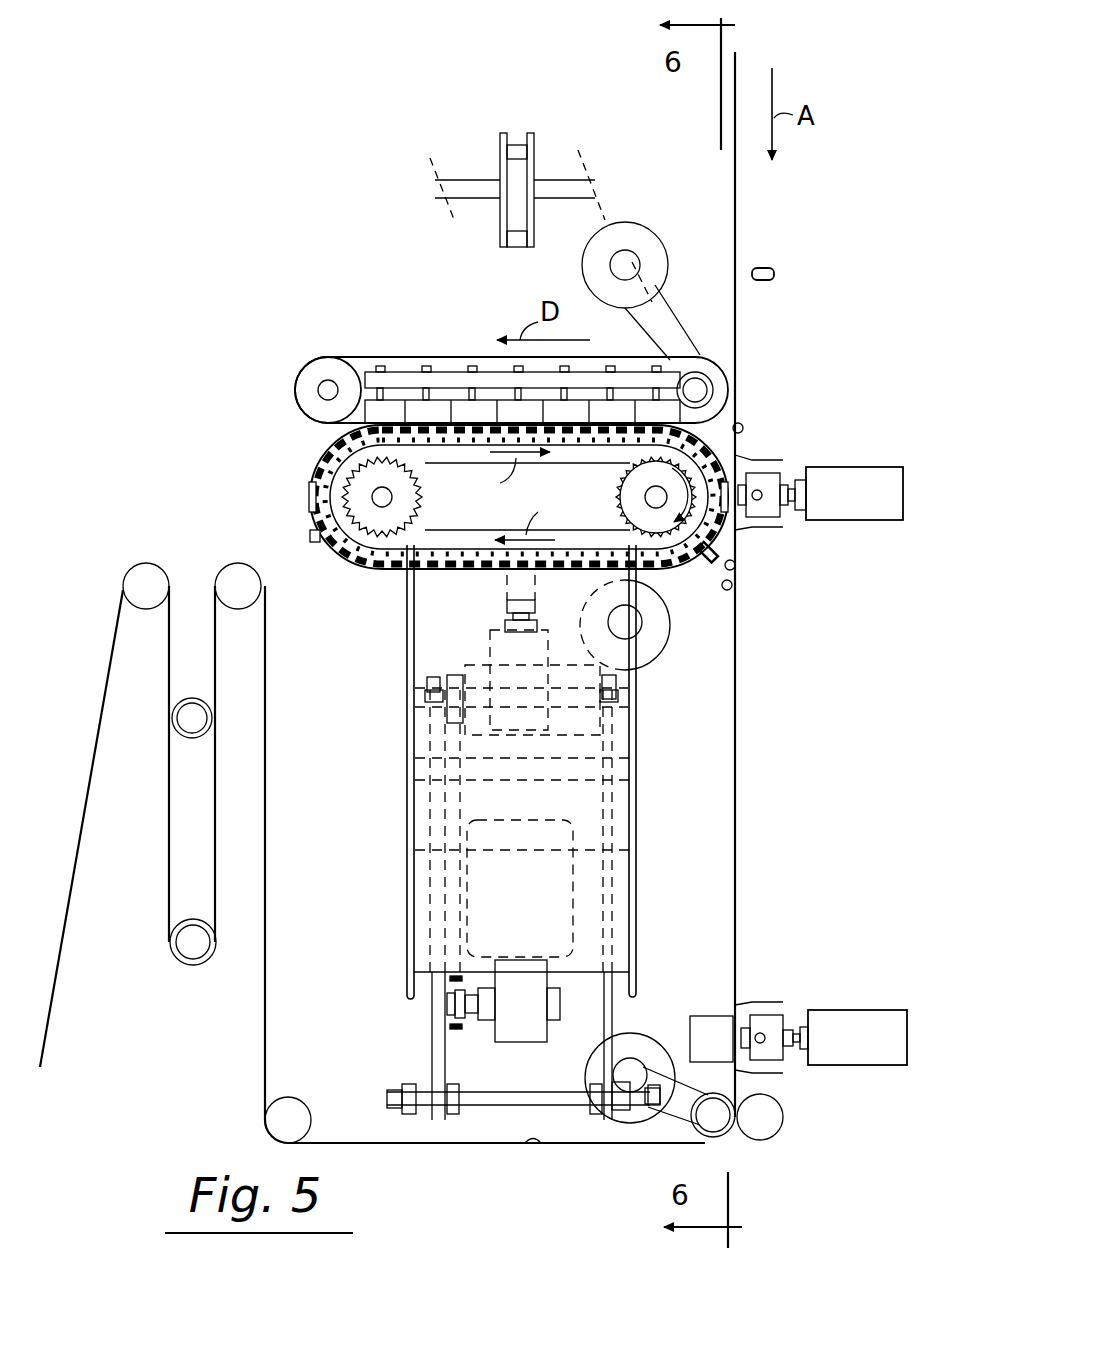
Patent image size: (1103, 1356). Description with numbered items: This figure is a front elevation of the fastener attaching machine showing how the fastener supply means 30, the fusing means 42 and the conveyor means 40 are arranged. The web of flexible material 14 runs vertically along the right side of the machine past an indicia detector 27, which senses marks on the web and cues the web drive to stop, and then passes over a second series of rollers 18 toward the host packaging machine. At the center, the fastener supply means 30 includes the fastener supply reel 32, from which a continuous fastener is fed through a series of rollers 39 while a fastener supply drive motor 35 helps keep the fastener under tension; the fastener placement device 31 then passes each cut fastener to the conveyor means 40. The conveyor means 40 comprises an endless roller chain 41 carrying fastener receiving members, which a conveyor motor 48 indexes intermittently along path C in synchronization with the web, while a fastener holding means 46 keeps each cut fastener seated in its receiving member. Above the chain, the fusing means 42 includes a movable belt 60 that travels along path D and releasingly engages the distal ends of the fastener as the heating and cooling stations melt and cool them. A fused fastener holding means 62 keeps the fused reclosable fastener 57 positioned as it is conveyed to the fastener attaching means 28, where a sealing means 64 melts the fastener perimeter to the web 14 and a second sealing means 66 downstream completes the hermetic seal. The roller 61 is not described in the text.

The flexible material 14 is at (105, 672).
The second series of rollers 18 is at (183, 978).
The indicia detector 27 is at (766, 268).
The fastener attaching means 28 is at (856, 524).
The fastener supply means 30 is at (650, 865).
The fastener placement device 31 is at (492, 645).
The fastener supply reel 32 is at (640, 818).
The fastener supply drive motor 35 is at (566, 1018).
The rollers 39 is at (503, 148).
The conveyor means 40 is at (297, 490).
The endless roller chain 41 is at (318, 455).
The fusing means 42 is at (300, 368).
The fastener holding means 46 is at (312, 547).
The conveyor motor 48 is at (645, 665).
The fused reclosable fastener 57 is at (95, 782).
The movable belt 60 is at (432, 352).
The roller 61 is at (638, 226).
The fused fastener holding means 62 is at (723, 457).
The sealing means 64 is at (762, 517).
The second sealing means 66 is at (782, 1008).